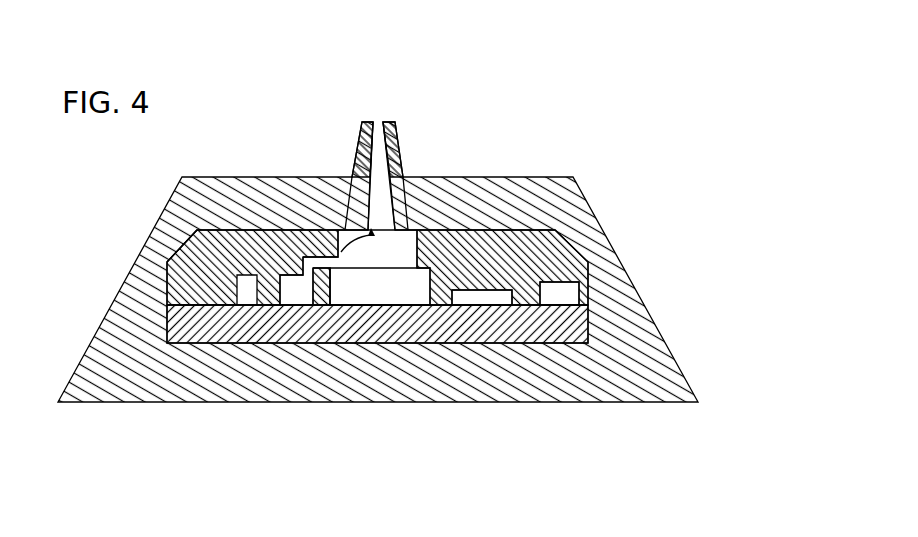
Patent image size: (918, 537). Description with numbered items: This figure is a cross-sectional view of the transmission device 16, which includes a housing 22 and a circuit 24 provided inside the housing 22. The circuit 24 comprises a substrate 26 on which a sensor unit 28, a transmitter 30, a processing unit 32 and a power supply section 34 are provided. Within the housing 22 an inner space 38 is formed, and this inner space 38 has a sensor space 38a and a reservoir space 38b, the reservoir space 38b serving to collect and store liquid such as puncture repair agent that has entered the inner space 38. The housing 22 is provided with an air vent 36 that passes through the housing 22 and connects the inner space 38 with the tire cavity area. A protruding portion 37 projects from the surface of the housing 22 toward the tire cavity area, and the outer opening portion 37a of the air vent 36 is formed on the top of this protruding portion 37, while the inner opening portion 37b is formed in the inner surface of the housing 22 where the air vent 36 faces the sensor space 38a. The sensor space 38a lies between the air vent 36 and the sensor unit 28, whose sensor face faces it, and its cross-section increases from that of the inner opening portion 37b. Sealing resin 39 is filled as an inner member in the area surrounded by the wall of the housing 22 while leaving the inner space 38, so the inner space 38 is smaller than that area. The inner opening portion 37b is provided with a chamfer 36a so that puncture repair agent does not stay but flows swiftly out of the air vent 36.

The transmission device 16 is at (576, 103).
The housing 22 is at (600, 238).
The circuit 24 is at (218, 297).
The substrate 26 is at (392, 340).
The sensor unit 28 is at (395, 295).
The transmitter 30 is at (566, 262).
The processing unit 32 is at (485, 285).
The power supply section 34 is at (247, 288).
The air vent 36 is at (381, 168).
The chamfer 36a is at (345, 228).
The protruding portion 37 is at (383, 120).
The outer opening portion 37a is at (381, 116).
The inner opening portion 37b is at (327, 228).
The inner space 38 is at (320, 363).
The sensor space 38a is at (372, 257).
The reservoir space 38b is at (300, 297).
The sealing resin 39 is at (457, 250).